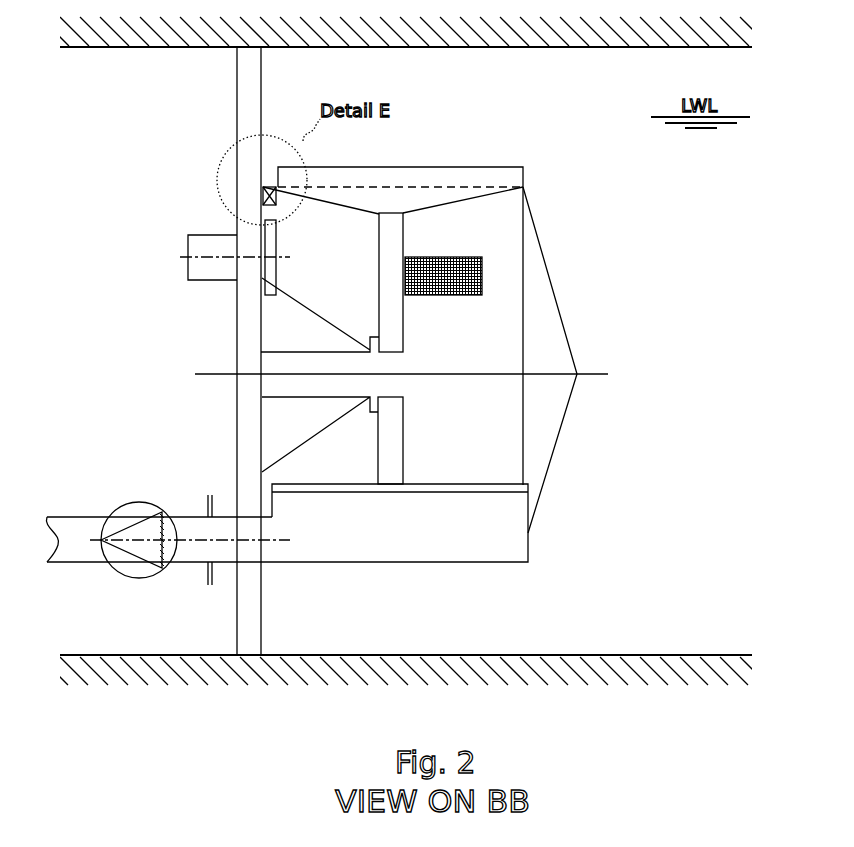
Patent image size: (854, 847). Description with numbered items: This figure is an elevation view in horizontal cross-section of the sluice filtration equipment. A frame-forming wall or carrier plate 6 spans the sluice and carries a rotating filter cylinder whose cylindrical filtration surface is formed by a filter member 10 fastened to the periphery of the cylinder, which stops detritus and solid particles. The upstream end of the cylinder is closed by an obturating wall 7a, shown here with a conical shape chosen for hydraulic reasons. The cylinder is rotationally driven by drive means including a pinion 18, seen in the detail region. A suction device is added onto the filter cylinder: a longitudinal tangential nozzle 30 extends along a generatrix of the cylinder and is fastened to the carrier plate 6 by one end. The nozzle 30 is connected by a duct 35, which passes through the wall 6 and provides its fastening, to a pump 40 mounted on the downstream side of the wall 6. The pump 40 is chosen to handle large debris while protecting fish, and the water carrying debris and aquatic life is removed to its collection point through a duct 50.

The carrier plate 6 is at (243, 323).
The filter member 10 is at (453, 253).
The upstream end 7a is at (565, 287).
The pinion 18 is at (277, 245).
The tangential nozzle 30 is at (481, 553).
The duct 35 is at (190, 516).
The pump 40 is at (127, 579).
The duct 50 is at (72, 558).